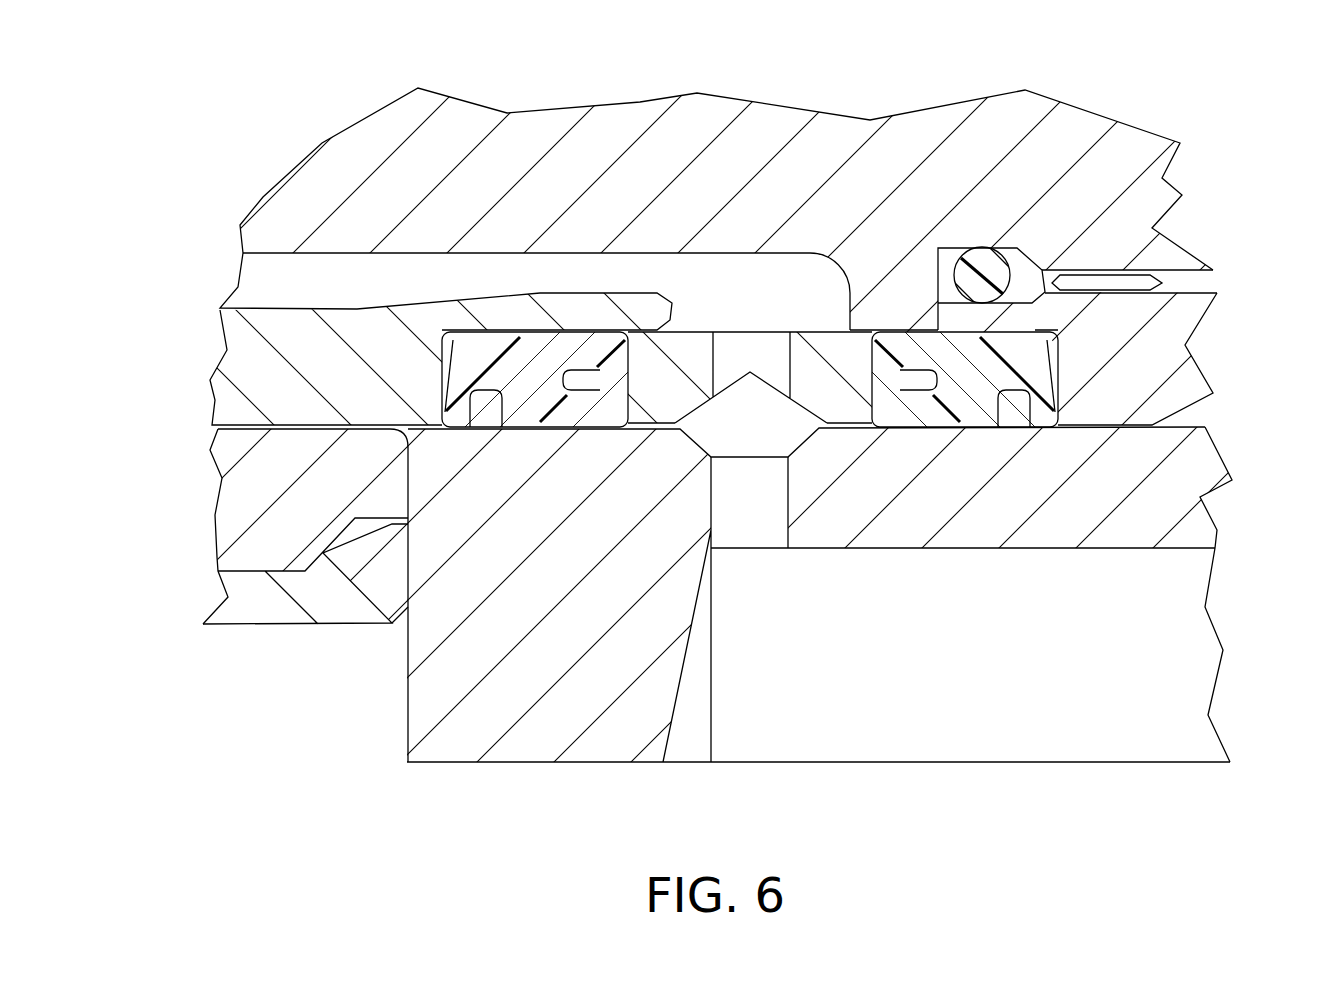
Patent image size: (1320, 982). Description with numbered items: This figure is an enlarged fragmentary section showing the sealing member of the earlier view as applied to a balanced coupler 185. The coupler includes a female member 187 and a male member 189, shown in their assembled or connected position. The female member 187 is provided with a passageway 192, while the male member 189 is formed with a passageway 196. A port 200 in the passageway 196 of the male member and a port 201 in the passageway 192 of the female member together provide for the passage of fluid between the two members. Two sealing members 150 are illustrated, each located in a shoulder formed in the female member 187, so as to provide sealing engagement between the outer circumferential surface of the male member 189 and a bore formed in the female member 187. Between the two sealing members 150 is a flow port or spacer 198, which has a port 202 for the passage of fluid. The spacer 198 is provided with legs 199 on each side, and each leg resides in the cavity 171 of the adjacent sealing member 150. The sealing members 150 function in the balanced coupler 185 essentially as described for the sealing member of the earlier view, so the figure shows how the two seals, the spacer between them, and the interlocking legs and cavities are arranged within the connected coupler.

The balanced coupler 185 is at (530, 85).
The female member 187 is at (263, 197).
The male member 189 is at (592, 685).
The passageway 192 is at (562, 292).
The passageway 196 is at (1062, 702).
The flow port or spacer 198 is at (837, 363).
The legs 199 is at (648, 392).
The port 200 is at (722, 510).
The port 201 is at (720, 293).
The port 202 is at (747, 340).
The sealing members 150 is at (487, 362).
The cavity 171 is at (580, 390).